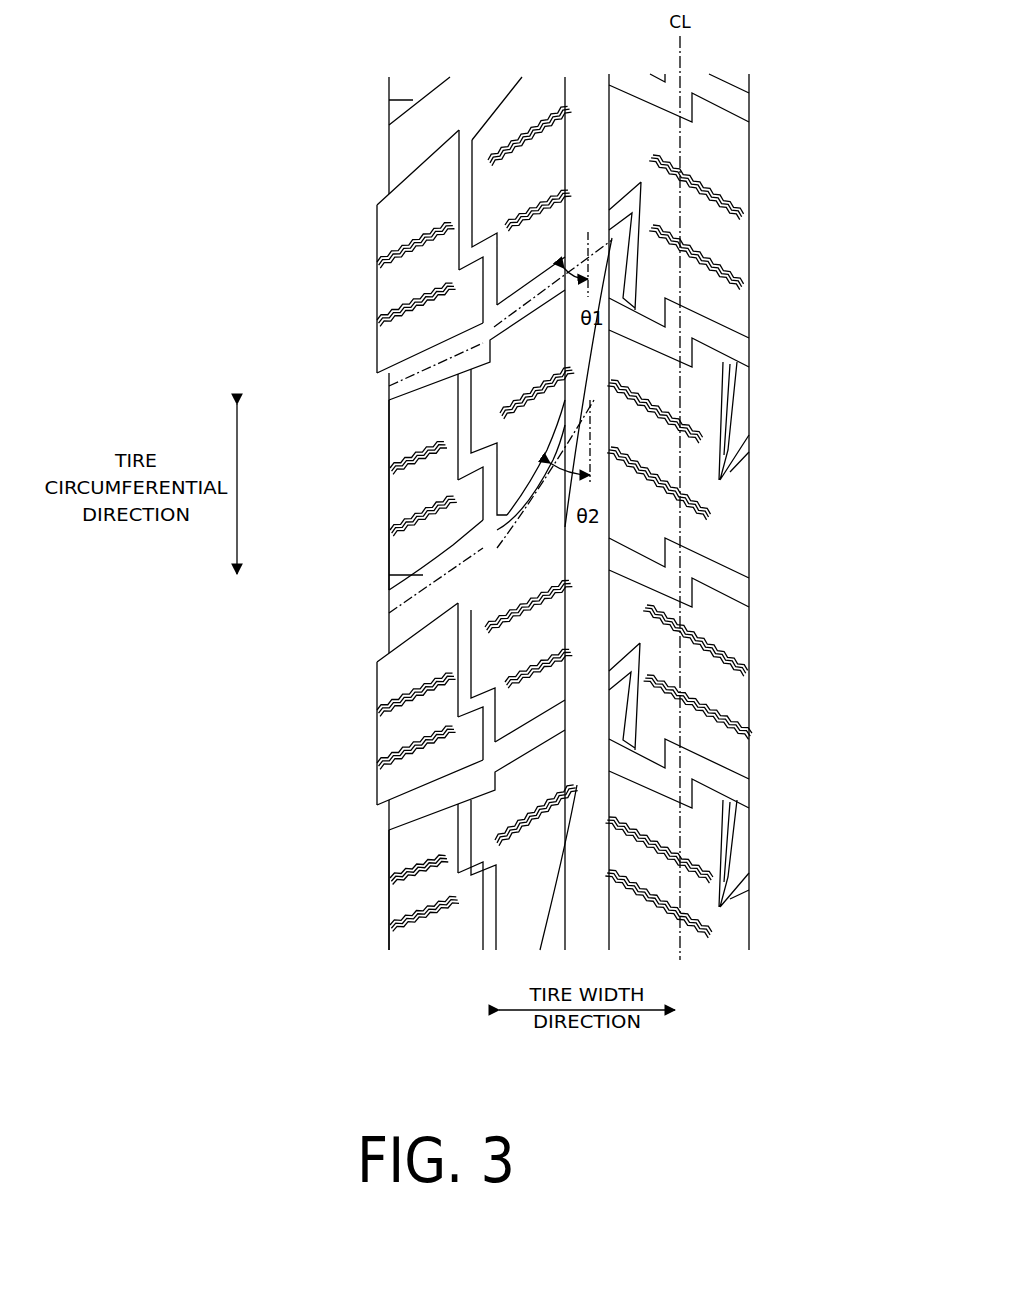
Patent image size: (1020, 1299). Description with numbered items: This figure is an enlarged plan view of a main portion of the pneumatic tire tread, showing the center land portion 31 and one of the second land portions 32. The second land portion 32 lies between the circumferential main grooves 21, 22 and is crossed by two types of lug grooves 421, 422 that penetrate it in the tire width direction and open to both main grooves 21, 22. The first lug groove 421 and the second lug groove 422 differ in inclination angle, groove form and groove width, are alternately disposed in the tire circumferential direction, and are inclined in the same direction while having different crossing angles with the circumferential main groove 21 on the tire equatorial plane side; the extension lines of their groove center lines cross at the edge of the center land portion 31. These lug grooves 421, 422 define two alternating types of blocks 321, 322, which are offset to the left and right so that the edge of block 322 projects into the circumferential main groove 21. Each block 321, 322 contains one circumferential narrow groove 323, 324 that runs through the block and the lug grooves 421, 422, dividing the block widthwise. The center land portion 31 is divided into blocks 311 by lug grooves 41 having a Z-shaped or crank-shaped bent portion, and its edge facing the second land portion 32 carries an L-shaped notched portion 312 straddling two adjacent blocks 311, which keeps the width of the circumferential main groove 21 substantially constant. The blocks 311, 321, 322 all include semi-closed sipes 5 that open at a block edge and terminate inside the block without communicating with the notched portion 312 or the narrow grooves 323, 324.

The sipe 5 is at (377, 263).
The circumferential main groove 21 is at (567, 77).
The circumferential main groove 22 is at (380, 77).
The center land portion 31 is at (714, 71).
The second land portion 32 is at (451, 73).
The lug groove 41 is at (735, 105).
The block 311 is at (752, 180).
The notched portion 312 is at (632, 278).
The block 321 is at (377, 237).
The block 322 is at (388, 491).
The circumferential narrow groove 323 is at (463, 207).
The circumferential narrow groove 324 is at (465, 417).
The first lug groove 421 is at (403, 403).
The second lug groove 422 is at (400, 102).